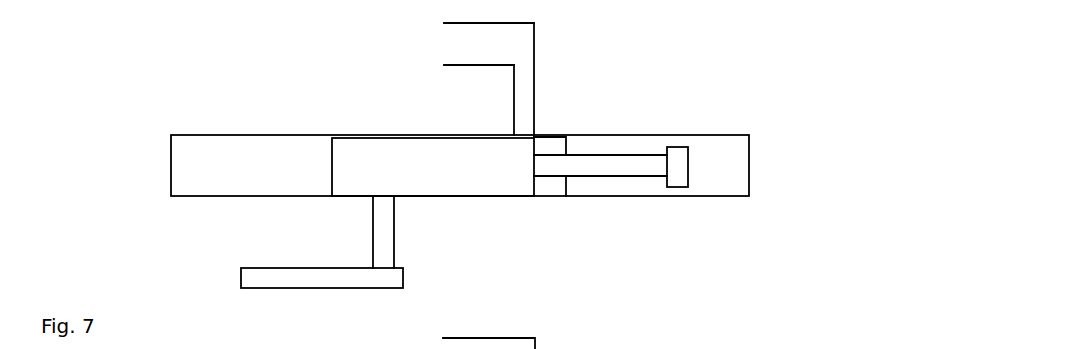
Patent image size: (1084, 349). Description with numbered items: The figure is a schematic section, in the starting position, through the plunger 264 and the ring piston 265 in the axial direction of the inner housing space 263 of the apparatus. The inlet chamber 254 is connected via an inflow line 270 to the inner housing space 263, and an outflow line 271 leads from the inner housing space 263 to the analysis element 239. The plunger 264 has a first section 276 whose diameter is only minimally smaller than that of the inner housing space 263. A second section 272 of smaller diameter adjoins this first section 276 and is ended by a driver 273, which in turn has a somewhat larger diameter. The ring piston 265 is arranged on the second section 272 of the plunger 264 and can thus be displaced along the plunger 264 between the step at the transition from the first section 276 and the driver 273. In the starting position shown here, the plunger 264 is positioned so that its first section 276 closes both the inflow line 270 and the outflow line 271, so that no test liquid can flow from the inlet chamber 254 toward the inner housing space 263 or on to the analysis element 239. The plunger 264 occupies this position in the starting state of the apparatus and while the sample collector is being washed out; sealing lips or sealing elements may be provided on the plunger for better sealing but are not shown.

The analysis element 239 is at (262, 277).
The inlet chamber 254 is at (454, 45).
The inner housing space 263 is at (738, 157).
The plunger 264 is at (396, 133).
The ring piston 265 is at (557, 187).
The inflow line 270 is at (524, 95).
The outflow line 271 is at (382, 227).
The second section 272 is at (648, 155).
The driver 273 is at (677, 175).
The first section 276 is at (363, 177).